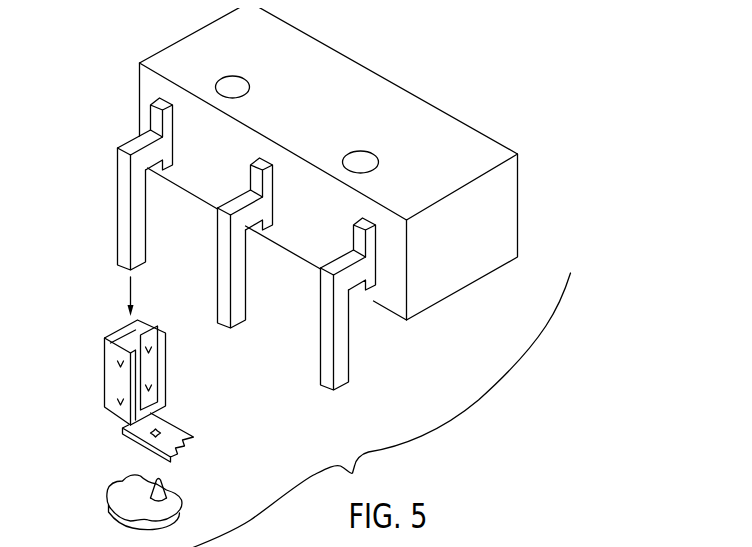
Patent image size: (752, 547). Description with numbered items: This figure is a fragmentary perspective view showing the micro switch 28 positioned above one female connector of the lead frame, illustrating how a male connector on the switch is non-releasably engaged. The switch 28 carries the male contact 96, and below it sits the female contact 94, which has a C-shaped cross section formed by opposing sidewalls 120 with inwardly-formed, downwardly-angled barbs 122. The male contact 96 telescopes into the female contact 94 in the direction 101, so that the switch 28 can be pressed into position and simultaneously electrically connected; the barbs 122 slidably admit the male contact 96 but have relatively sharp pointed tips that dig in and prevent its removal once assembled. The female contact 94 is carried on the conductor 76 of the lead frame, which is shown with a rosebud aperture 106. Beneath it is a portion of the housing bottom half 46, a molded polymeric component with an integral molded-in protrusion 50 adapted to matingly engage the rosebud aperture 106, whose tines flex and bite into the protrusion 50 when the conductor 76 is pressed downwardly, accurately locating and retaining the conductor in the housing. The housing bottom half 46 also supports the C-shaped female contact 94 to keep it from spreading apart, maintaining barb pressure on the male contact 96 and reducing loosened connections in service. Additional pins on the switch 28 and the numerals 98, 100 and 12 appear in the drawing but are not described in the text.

The micro switch 28 is at (406, 94).
The male contact 96 is at (120, 248).
The second terminal pin 98 is at (235, 313).
The third terminal pin 100 is at (337, 372).
The direction 101 is at (129, 288).
The female contact 94 is at (88, 408).
The sidewalls 120 is at (135, 371).
The barbs 122 is at (112, 363).
The rosebud aperture 106 is at (158, 428).
The conductor 76 is at (178, 443).
The housing bottom half 46 is at (122, 478).
The protrusion 50 is at (162, 480).
The circuit board 12 is at (737, 530).